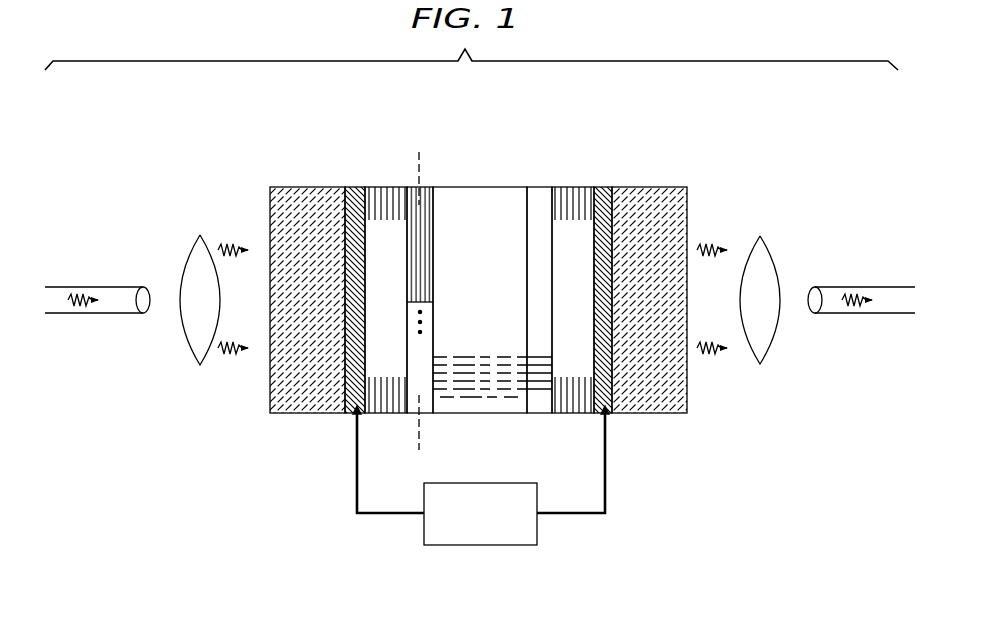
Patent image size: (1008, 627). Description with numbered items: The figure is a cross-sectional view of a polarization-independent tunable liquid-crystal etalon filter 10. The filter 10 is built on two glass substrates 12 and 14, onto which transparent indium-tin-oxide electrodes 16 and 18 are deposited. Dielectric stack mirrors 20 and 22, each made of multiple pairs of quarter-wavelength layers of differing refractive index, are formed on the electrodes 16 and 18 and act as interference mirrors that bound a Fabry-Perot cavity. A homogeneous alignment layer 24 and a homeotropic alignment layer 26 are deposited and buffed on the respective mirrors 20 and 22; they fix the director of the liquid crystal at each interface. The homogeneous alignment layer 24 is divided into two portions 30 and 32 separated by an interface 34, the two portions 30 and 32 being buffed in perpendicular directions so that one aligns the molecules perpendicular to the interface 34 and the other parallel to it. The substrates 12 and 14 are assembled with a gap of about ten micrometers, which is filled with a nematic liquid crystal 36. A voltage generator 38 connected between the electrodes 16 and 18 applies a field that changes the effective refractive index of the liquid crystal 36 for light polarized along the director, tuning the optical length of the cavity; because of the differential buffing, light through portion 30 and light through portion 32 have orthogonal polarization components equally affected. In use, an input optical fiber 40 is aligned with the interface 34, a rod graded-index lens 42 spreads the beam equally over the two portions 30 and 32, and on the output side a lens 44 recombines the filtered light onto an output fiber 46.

The polarization-independent tunable liquid-crystal filter 10 is at (665, 452).
The glass substrate 12 is at (283, 189).
The glass substrate 14 is at (673, 190).
The transparent indium-tin-oxide electrode 16 is at (327, 189).
The transparent indium-tin-oxide electrode 18 is at (612, 190).
The dielectric stack mirror 20 is at (380, 189).
The dielectric stack mirror 22 is at (582, 190).
The homogeneous alignment layer 24 is at (425, 162).
The homeotropic alignment layer 26 is at (537, 200).
The homogeneous portion 30 is at (437, 190).
The homogeneous portion 32 is at (428, 413).
The interface 34 is at (433, 302).
The nematic liquid crystal 36 is at (488, 205).
The voltage generator 38 is at (480, 545).
The input optical fiber 40 is at (70, 287).
The rod graded-index lens 42 is at (191, 241).
The lens 44 is at (766, 241).
The output fiber 46 is at (862, 287).